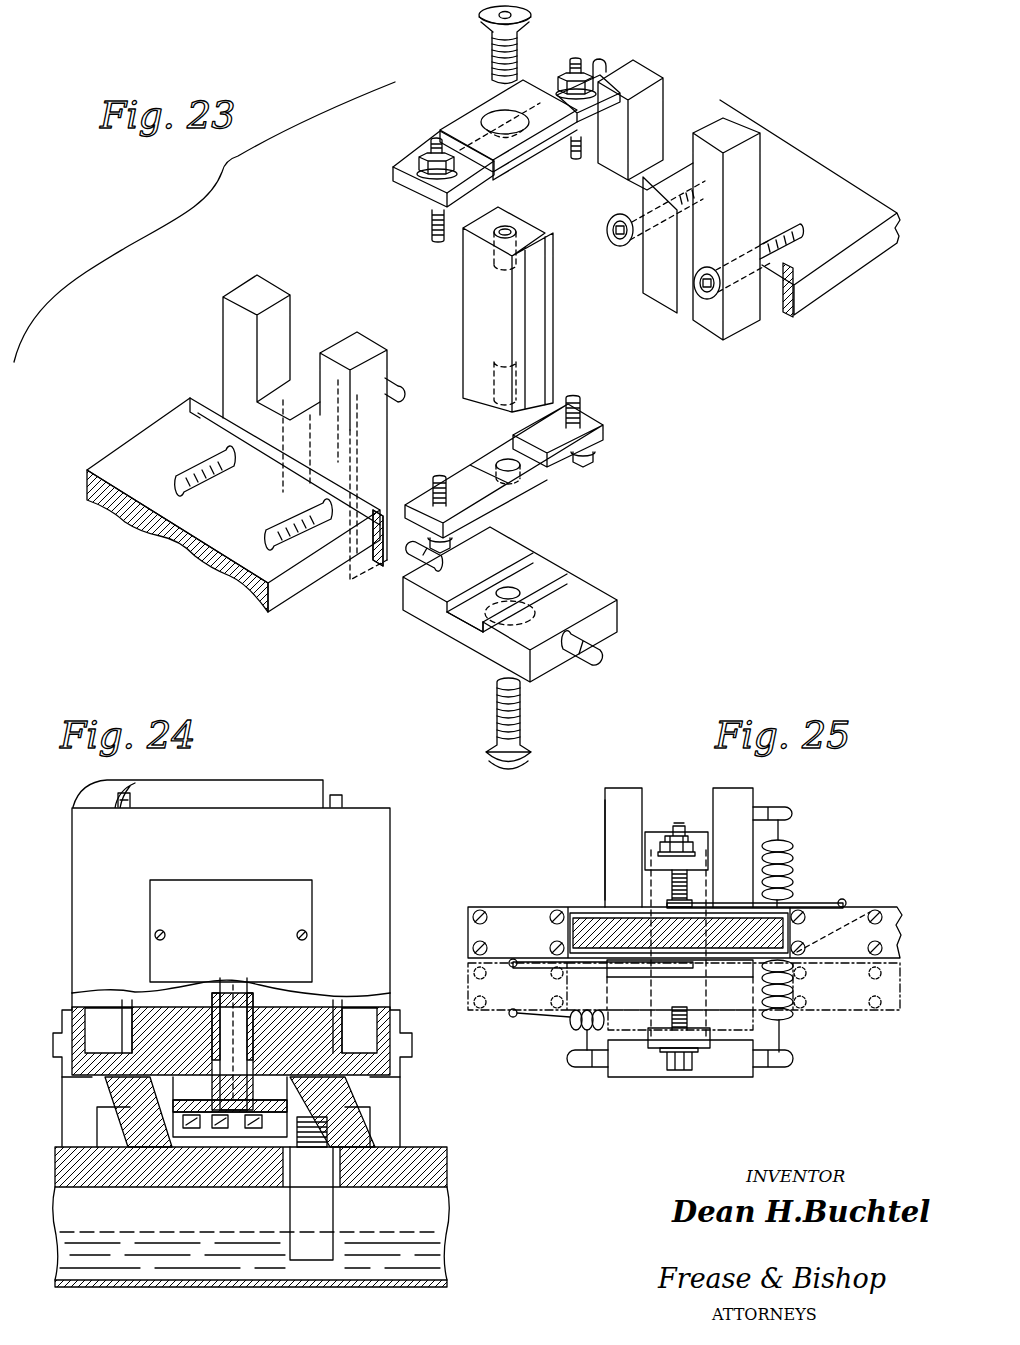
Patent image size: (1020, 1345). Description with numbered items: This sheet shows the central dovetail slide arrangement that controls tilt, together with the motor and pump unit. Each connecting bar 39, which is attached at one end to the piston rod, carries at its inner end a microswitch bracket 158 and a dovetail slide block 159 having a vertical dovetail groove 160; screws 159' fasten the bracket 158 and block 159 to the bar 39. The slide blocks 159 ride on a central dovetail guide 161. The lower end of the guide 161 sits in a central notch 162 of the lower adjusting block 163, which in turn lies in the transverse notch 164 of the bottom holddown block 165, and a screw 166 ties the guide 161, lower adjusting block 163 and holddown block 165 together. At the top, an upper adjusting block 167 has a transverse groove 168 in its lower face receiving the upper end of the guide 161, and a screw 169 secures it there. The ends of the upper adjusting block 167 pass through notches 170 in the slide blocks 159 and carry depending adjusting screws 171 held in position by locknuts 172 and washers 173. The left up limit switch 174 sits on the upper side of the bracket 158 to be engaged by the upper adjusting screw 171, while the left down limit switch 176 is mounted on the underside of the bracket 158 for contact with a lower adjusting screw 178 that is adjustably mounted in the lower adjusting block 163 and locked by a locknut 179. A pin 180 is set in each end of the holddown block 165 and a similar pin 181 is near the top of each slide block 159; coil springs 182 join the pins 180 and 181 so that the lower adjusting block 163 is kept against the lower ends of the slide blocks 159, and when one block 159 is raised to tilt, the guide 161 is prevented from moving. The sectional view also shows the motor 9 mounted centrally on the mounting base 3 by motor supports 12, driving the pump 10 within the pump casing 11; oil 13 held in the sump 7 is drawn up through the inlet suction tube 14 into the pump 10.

In FIG. 23, the screw 169 is at (531, 14).
In FIG. 23, the transverse groove 168 is at (538, 160).
In FIG. 23, the locknut 172 is at (566, 74).
In FIG. 25, the locknut 172 is at (664, 843).
In FIG. 23, the pin 181 is at (598, 70).
In FIG. 25, the pin 181 is at (795, 813).
In FIG. 23, the notch 170 is at (658, 100).
In FIG. 25, the notch 170 is at (643, 810).
In FIG. 23, the vertical dovetail groove 160 is at (668, 285).
In FIG. 23, the dovetail slide block 159 is at (475, 252).
In FIG. 25, the dovetail slide block 159 is at (575, 850).
In FIG. 23, the screw 159' is at (454, 365).
In FIG. 23, the microswitch bracket 158 is at (787, 318).
In FIG. 25, the microswitch bracket 158 is at (590, 913).
In FIG. 23, the connecting bar 39 is at (830, 273).
In FIG. 25, the connecting bar 39 is at (587, 925).
In FIG. 23, the adjusting screw 171 is at (574, 160).
In FIG. 25, the adjusting screw 171 is at (672, 886).
In FIG. 23, the upper adjusting block 167 is at (392, 180).
In FIG. 25, the upper adjusting block 167 is at (698, 832).
In FIG. 23, the washer 173 is at (420, 192).
In FIG. 23, the dovetail guide 161 is at (478, 300).
In FIG. 25, the dovetail guide 161 is at (697, 987).
In FIG. 23, the lower adjusting block 163 is at (605, 437).
In FIG. 25, the lower adjusting block 163 is at (700, 1042).
In FIG. 23, the central notch 162 is at (530, 467).
In FIG. 23, the lower adjusting screw 178 is at (437, 478).
In FIG. 25, the lower adjusting screw 178 is at (670, 1010).
In FIG. 23, the locknut 179 is at (593, 460).
In FIG. 25, the locknut 179 is at (667, 1057).
In FIG. 23, the bottom holddown block 165 is at (607, 625).
In FIG. 25, the bottom holddown block 165 is at (738, 1067).
In FIG. 23, the transverse notch 164 is at (517, 568).
In FIG. 23, the pin 180 is at (410, 560).
In FIG. 25, the pin 180 is at (572, 1066).
In FIG. 23, the screw 166 is at (531, 750).
In FIG. 24, the motor 9 is at (351, 866).
In FIG. 24, the pump 10 is at (202, 1113).
In FIG. 24, the pump casing 11 is at (370, 1102).
In FIG. 24, the motor support 12 is at (395, 1110).
In FIG. 24, the mounting base 3 is at (425, 1150).
In FIG. 24, the inlet suction tube 14 is at (320, 1210).
In FIG. 24, the oil 13 is at (410, 1232).
In FIG. 24, the sump 7 is at (400, 1284).
In FIG. 25, the left up limit switch 174 is at (727, 905).
In FIG. 25, the coil spring 182 is at (797, 870).
In FIG. 25, the left down limit switch 176 is at (590, 970).